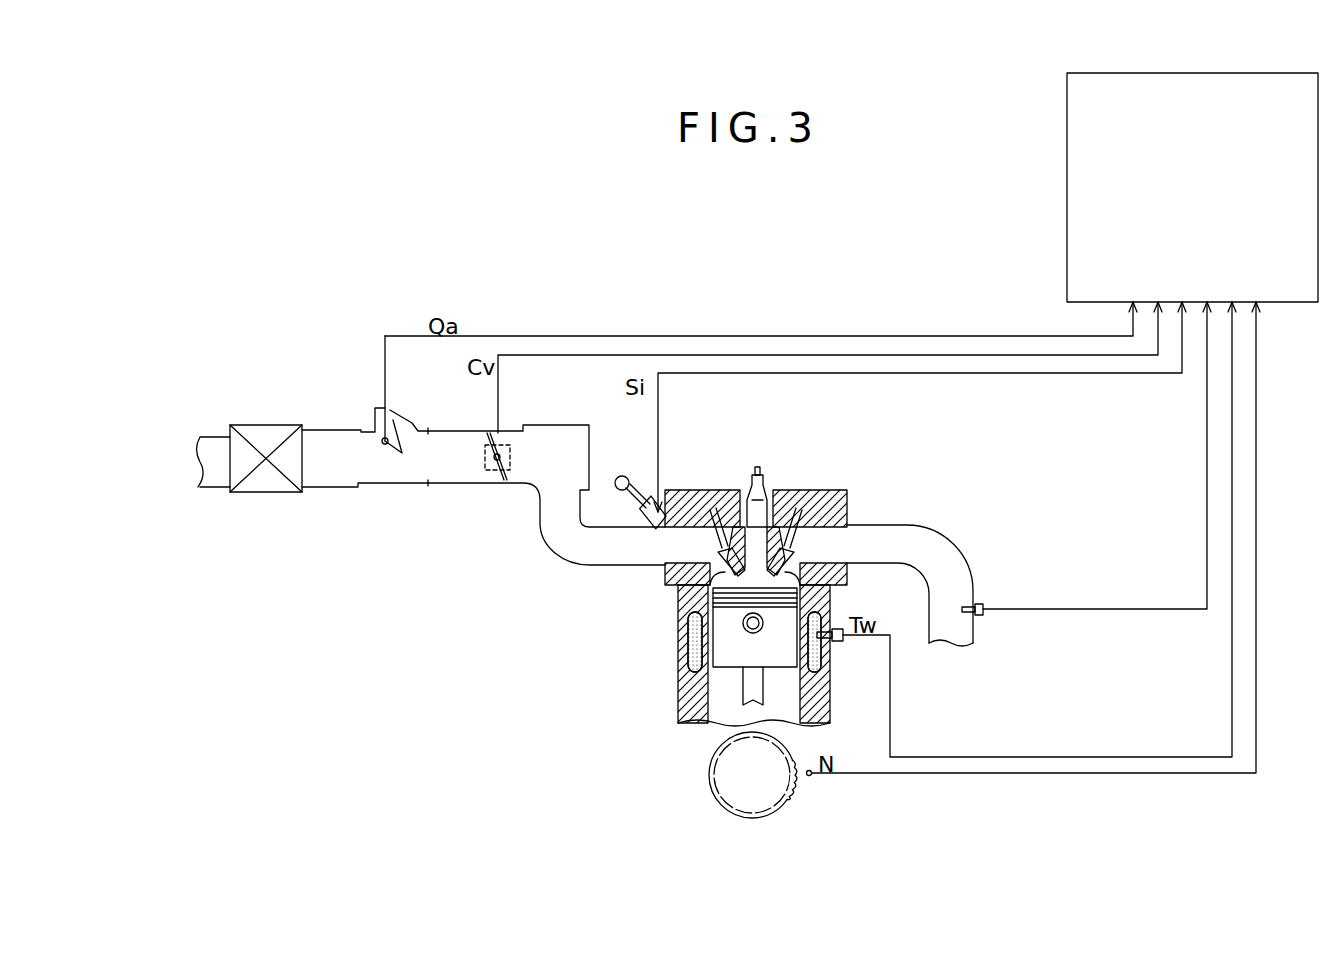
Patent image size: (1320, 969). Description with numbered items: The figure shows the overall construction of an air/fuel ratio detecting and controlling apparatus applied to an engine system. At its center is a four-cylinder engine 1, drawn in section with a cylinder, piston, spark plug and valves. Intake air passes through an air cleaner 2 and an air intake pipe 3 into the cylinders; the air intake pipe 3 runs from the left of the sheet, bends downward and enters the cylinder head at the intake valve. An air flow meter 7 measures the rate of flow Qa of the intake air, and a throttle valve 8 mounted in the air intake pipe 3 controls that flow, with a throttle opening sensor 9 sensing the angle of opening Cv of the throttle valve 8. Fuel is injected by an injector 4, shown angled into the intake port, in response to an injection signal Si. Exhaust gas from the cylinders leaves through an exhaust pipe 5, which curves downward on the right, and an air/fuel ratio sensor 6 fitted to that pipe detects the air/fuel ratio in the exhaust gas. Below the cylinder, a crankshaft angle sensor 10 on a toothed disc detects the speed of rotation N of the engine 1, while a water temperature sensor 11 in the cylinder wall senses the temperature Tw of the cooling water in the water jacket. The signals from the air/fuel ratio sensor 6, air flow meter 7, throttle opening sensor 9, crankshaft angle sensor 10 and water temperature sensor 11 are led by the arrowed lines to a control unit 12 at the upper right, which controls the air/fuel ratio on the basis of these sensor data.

The engine 1 is at (622, 697).
The air cleaner 2 is at (275, 492).
The air intake pipe 3 is at (552, 549).
The injector 4 is at (640, 508).
The exhaust pipe 5 is at (947, 545).
The air/fuel ratio sensor 6 is at (977, 615).
The air flow meter 7 is at (382, 442).
The throttle valve 8 is at (486, 437).
The throttle opening sensor 9 is at (537, 454).
The crankshaft angle sensor 10 is at (814, 787).
The water temperature sensor 11 is at (840, 642).
The control unit 12 is at (1067, 147).